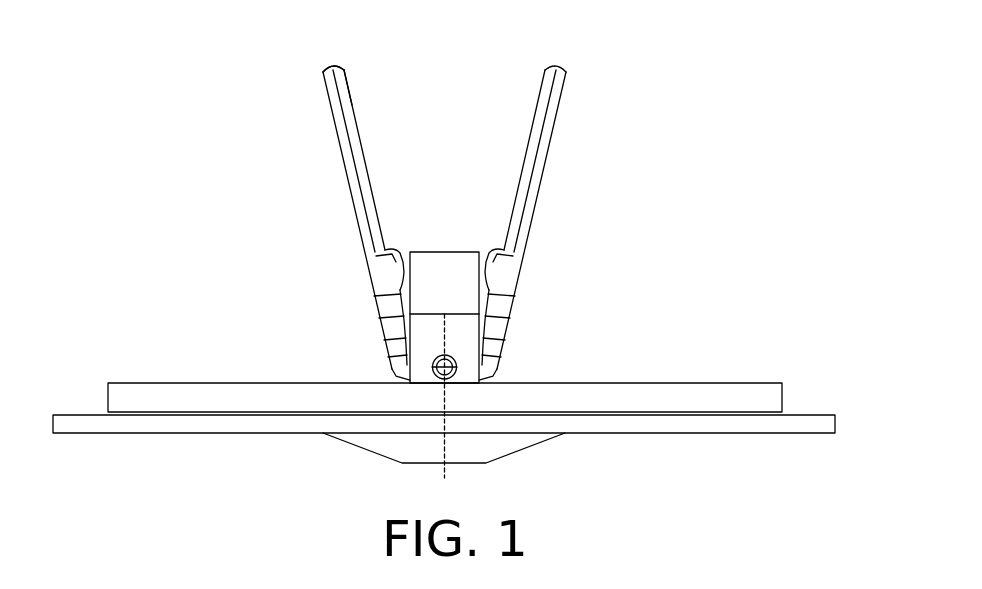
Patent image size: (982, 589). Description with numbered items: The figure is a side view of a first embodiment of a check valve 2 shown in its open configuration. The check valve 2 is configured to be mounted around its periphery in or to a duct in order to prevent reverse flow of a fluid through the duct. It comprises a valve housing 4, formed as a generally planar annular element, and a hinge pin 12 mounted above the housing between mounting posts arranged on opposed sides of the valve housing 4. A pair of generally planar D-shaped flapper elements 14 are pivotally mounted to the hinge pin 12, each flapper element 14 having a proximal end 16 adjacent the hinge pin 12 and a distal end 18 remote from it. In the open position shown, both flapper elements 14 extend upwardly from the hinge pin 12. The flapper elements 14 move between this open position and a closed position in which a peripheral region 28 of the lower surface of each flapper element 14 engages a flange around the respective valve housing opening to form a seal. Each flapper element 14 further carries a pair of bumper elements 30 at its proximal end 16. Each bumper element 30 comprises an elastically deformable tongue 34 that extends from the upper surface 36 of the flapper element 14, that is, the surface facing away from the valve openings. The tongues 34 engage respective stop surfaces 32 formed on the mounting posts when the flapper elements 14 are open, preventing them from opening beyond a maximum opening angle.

The check valve 2 is at (197, 448).
The valve housing 4 is at (750, 382).
The hinge pin 12 is at (410, 363).
The flapper element 14 is at (337, 142).
The proximal end 16 is at (457, 367).
The distal end 18 is at (570, 73).
The peripheral region 28 is at (322, 85).
The bumper element 30 is at (380, 257).
The stop surface 32 is at (412, 298).
The elastically deformable tongue 34 is at (490, 270).
The upper surface 36 is at (347, 88).